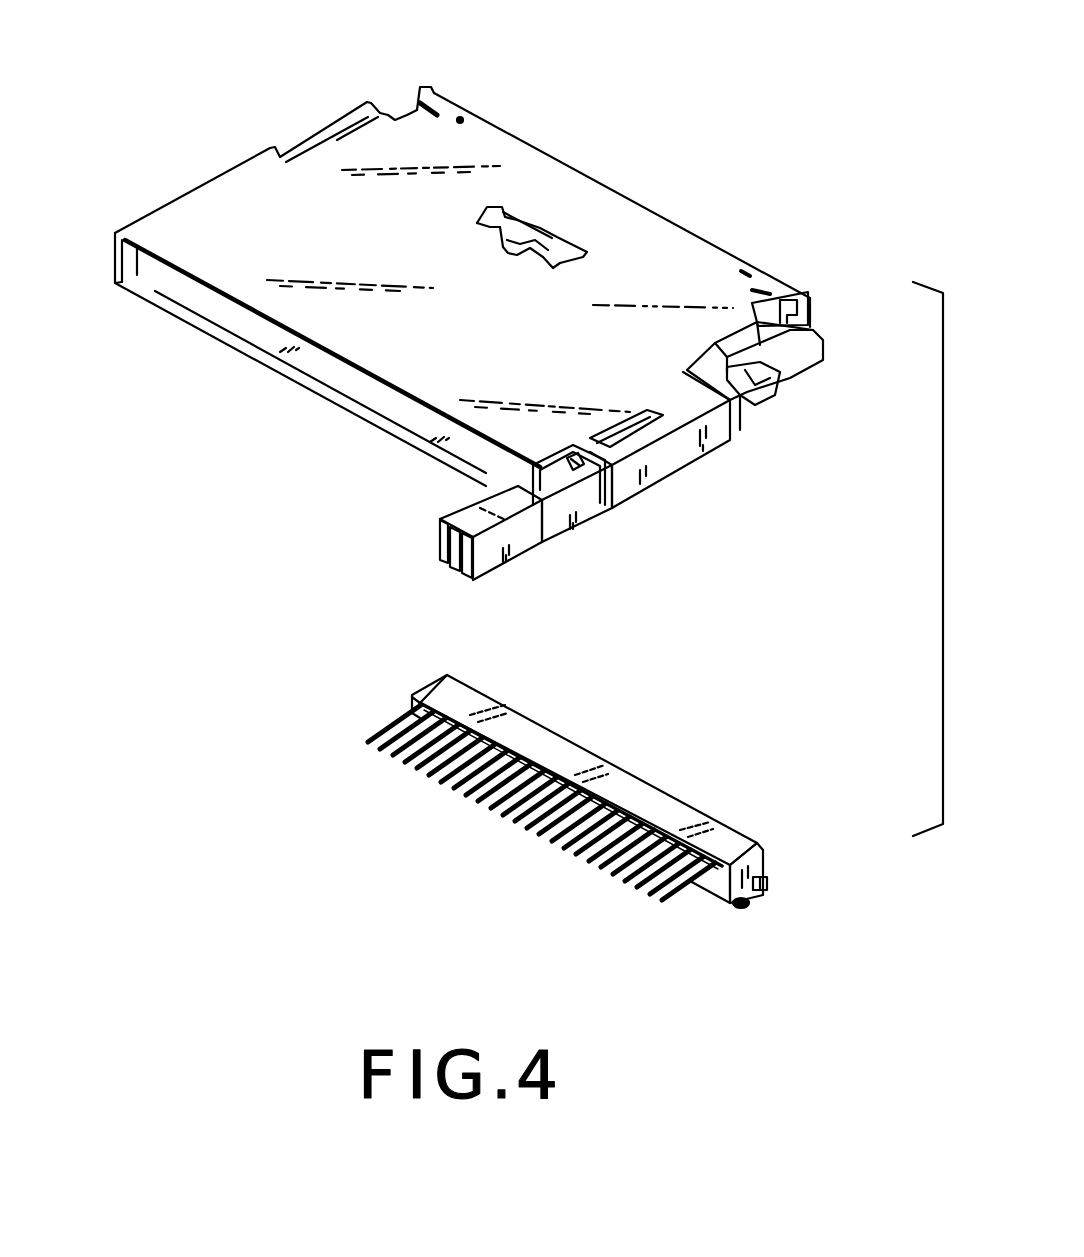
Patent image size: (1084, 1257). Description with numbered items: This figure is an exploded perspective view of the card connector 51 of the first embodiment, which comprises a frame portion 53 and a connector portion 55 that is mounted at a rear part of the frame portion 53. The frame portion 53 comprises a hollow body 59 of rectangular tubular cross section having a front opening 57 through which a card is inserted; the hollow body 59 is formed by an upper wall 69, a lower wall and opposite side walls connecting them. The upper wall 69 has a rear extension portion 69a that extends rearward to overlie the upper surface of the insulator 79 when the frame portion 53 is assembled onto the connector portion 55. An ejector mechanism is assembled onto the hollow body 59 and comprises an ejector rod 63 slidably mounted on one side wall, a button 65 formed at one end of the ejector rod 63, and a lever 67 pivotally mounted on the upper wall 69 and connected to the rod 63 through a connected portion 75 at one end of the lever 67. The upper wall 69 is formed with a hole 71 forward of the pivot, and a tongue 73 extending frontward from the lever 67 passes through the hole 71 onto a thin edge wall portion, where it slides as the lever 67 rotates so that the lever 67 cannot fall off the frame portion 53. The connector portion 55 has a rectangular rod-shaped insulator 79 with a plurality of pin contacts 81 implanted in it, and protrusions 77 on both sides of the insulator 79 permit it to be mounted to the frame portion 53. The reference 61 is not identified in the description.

The card connector 51 is at (332, 610).
The frame portion 53 is at (492, 94).
The connector portion 55 is at (628, 744).
The front opening 57 is at (340, 378).
The hollow body 59 is at (675, 220).
The header block 61 is at (677, 463).
The ejector rod 63 is at (580, 507).
The button 65 is at (518, 546).
The lever 67 is at (745, 408).
The upper wall 69 is at (488, 323).
The rear extension portion 69a is at (505, 176).
The hole 71 is at (573, 263).
The tongue 73 is at (543, 228).
The connected portion 75 is at (772, 370).
The protrusions 77 is at (767, 884).
The insulator 79 is at (665, 808).
The pin contacts 81 is at (660, 908).